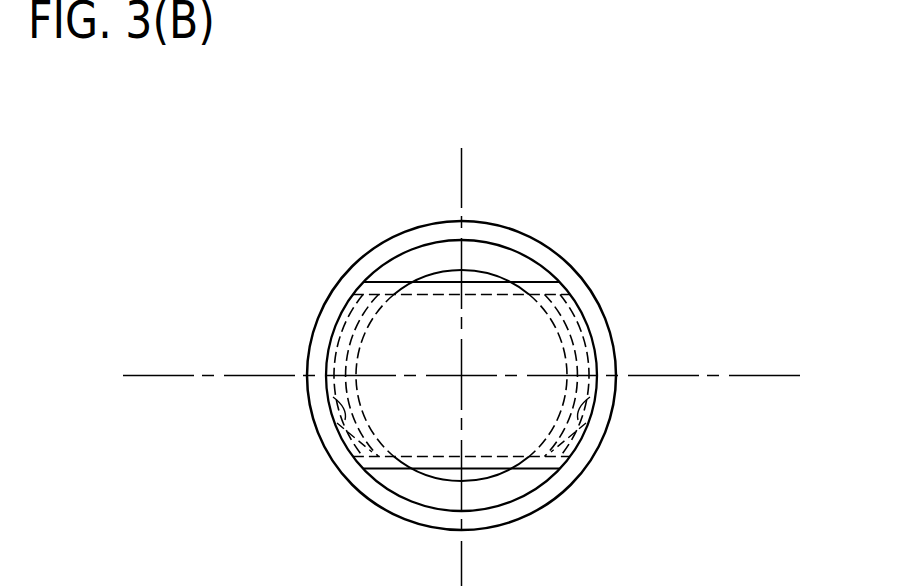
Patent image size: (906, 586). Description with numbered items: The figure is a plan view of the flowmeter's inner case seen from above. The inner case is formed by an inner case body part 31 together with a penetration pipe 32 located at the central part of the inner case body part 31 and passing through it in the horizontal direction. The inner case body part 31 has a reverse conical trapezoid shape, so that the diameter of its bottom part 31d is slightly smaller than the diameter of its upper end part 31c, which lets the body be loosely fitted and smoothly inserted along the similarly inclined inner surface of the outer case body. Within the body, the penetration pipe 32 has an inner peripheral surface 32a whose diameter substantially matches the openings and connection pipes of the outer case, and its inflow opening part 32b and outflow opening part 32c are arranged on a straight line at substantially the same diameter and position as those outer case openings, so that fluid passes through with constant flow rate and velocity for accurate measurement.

The inner case body part 31 is at (527, 237).
The upper end part 31c is at (399, 246).
The bottom part 31d is at (377, 333).
The penetration pipe 32 is at (535, 282).
The inner peripheral surface 32a is at (495, 295).
The inflow opening part 32b is at (337, 423).
The outflow opening part 32c is at (590, 433).